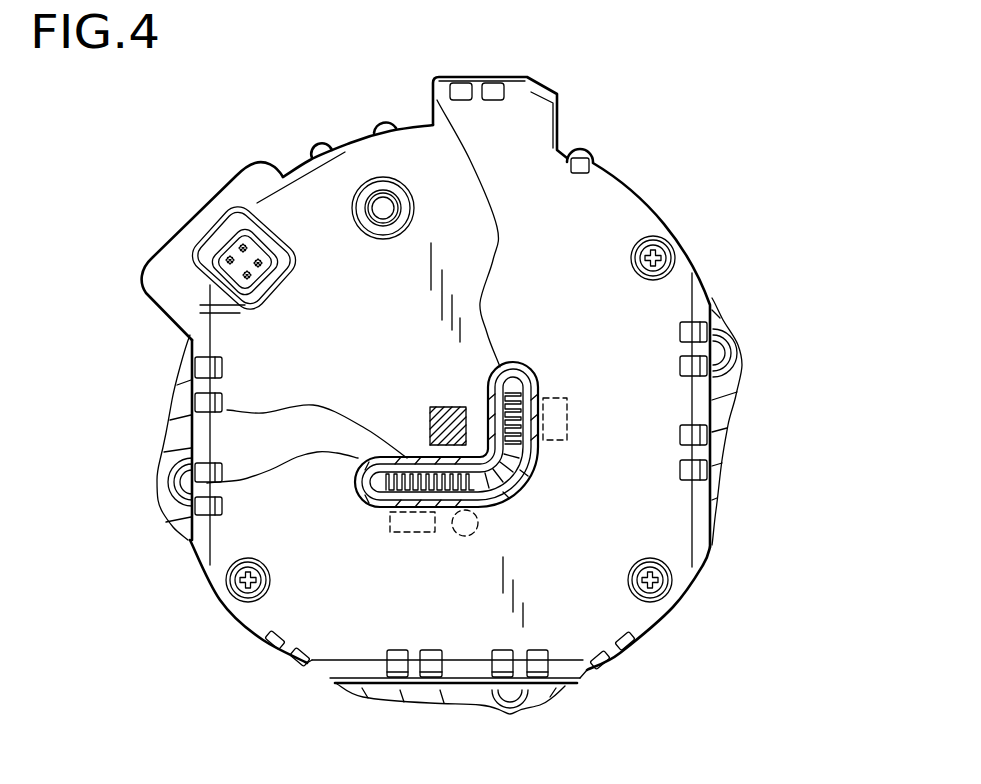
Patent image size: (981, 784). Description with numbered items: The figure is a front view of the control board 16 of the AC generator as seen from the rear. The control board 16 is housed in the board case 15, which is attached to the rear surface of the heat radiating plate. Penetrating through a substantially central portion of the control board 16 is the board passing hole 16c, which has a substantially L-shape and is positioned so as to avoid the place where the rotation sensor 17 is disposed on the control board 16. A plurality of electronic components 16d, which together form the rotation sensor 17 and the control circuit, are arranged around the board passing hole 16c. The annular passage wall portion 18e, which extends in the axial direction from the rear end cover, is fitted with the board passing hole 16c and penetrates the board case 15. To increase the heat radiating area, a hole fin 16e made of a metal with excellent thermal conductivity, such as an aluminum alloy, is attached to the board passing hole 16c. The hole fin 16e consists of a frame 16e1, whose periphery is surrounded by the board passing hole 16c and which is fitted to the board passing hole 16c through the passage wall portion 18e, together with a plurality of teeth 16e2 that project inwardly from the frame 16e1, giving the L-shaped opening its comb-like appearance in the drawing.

The board case 15 is at (730, 380).
The control board 16 is at (627, 207).
The board passing hole 16c is at (513, 383).
The electronic components 16d is at (567, 425).
The hole fin 16e is at (538, 490).
The frame 16e1 is at (527, 368).
The teeth 16e2 is at (170, 473).
The rotation sensor 17 is at (439, 404).
The passage wall portion 18e is at (227, 410).